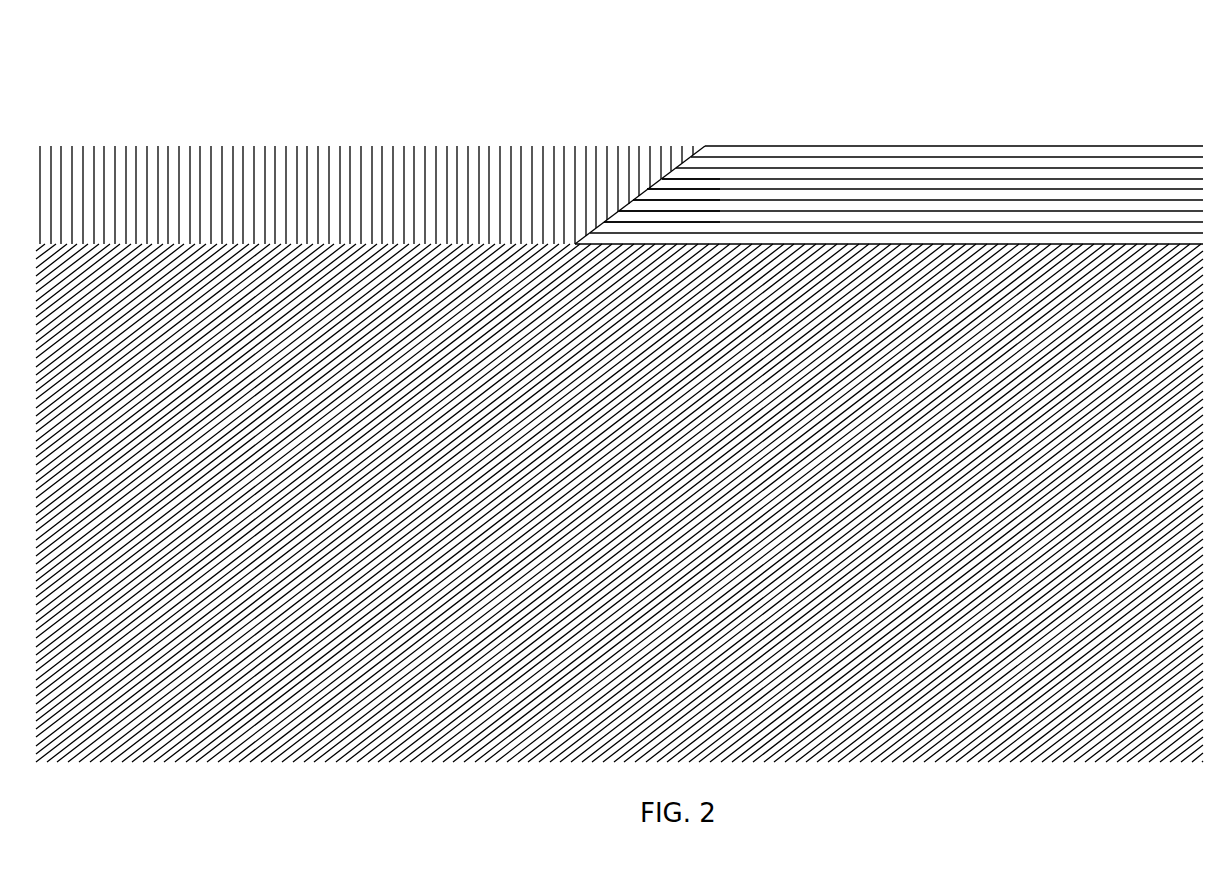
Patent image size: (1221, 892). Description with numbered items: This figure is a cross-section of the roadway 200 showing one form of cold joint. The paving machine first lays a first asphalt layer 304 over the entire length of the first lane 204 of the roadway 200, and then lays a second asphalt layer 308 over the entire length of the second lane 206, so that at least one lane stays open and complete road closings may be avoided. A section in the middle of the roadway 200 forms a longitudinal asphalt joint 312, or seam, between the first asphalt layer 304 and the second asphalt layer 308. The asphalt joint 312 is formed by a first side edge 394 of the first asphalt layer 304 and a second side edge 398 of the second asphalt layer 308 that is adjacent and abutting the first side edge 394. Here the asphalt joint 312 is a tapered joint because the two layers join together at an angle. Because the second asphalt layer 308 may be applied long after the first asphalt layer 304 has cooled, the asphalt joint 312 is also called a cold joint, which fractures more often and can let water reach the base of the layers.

The roadway 200 is at (597, 740).
The first lane 204 is at (889, 125).
The second lane 206 is at (366, 126).
The first asphalt layer 304 is at (902, 168).
The second asphalt layer 308 is at (203, 160).
The longitudinal asphalt joint 312 is at (642, 130).
The first side edge 394 is at (670, 213).
The second side edge 398 is at (598, 193).